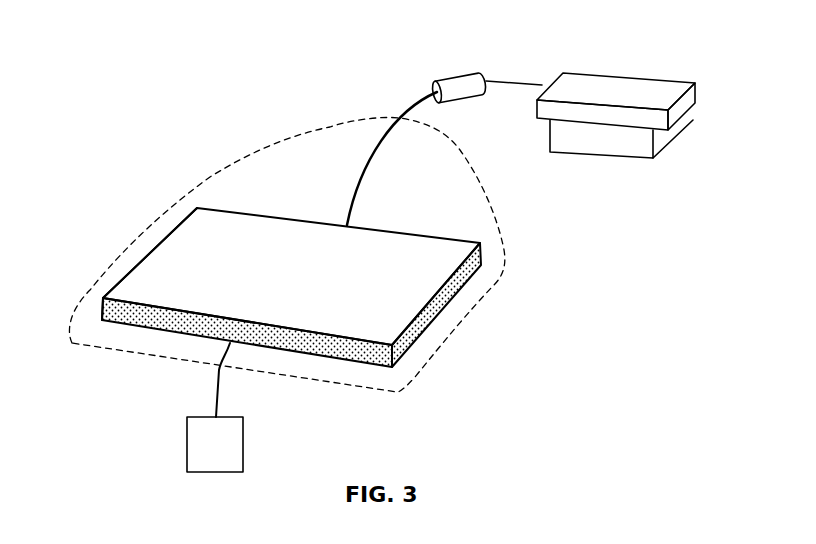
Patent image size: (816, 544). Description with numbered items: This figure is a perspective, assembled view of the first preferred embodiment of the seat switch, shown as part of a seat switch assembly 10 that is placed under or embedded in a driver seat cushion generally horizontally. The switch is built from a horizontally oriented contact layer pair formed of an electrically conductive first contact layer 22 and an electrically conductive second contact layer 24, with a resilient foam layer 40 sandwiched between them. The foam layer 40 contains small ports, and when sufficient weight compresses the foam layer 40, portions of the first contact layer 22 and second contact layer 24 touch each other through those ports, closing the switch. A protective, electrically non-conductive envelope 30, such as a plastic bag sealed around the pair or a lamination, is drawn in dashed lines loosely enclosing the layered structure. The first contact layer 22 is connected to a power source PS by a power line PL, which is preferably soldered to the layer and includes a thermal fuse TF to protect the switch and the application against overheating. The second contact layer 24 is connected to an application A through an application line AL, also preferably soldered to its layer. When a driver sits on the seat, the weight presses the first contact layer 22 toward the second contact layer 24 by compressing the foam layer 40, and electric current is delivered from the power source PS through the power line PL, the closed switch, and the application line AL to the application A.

The seat switch assembly 10 is at (178, 108).
The first contact layer 22 is at (128, 262).
The second contact layer 24 is at (97, 343).
The envelope 30 is at (425, 362).
The foam layer 40 is at (427, 320).
The power line PL is at (400, 110).
The thermal fuse TF is at (473, 92).
The power source PS is at (612, 149).
The application line AL is at (217, 390).
The application A is at (228, 462).